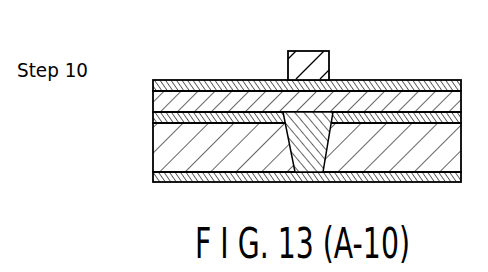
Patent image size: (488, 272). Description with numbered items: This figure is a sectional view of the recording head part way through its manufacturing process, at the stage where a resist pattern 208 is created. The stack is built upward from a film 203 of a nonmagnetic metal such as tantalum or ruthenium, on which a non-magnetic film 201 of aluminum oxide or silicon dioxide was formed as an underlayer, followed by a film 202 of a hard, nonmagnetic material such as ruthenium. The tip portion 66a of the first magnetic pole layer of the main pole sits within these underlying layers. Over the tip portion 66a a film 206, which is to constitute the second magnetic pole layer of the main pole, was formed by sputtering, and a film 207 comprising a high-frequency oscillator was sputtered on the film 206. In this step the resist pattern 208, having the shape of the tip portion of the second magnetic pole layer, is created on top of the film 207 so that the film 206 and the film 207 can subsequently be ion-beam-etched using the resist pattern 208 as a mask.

The non-magnetic film 201 is at (160, 148).
The film of hard nonmagnetic material 202 is at (153, 118).
The nonmagnetic metal film 203 is at (153, 177).
The film to constitute the second magnetic pole layer 206 is at (433, 91).
The film comprising a high-frequency oscillator 207 is at (190, 80).
The resist pattern 208 is at (302, 60).
The tip portion of the first magnetic pole layer 66a is at (313, 143).